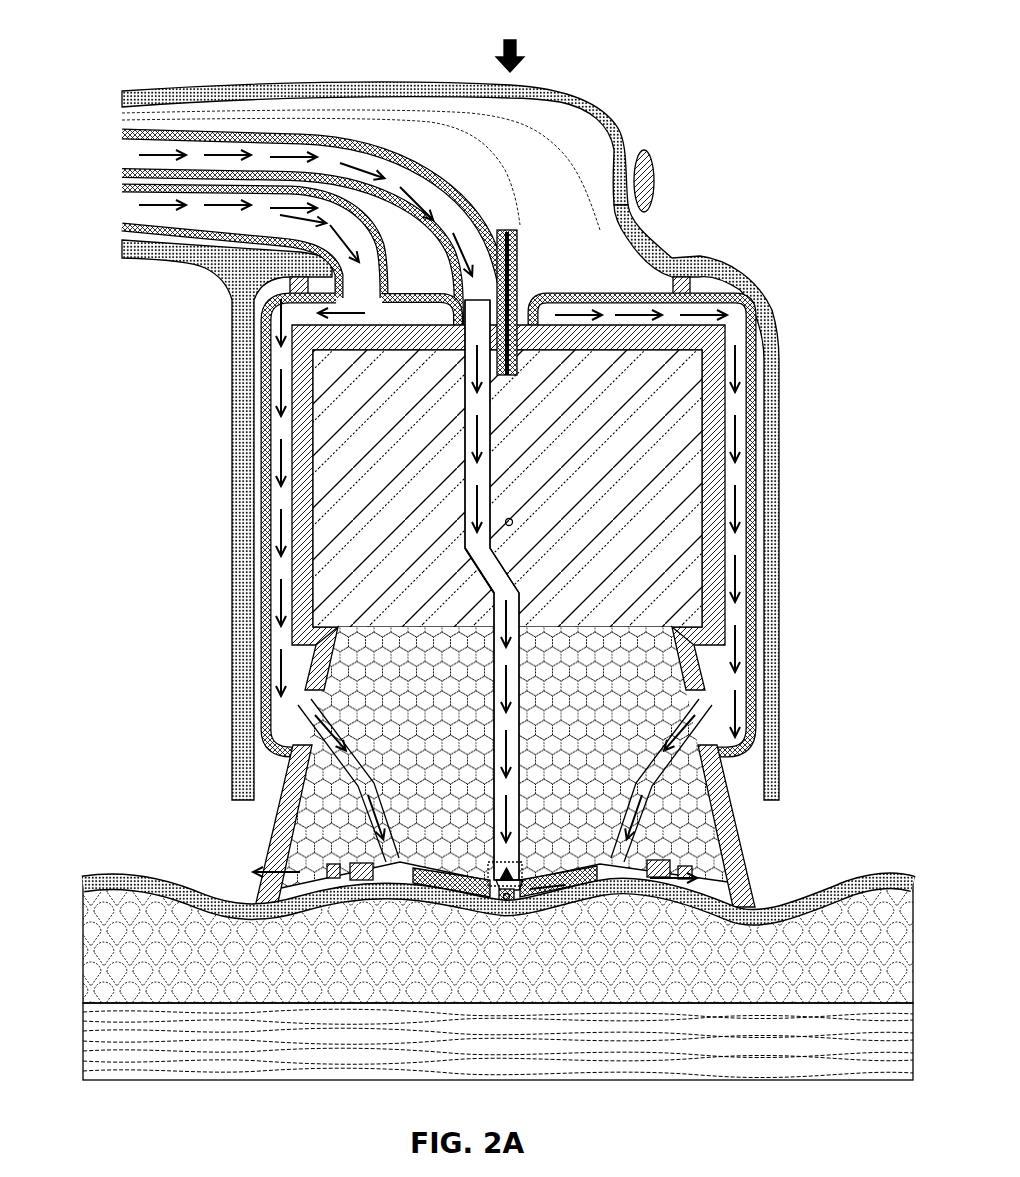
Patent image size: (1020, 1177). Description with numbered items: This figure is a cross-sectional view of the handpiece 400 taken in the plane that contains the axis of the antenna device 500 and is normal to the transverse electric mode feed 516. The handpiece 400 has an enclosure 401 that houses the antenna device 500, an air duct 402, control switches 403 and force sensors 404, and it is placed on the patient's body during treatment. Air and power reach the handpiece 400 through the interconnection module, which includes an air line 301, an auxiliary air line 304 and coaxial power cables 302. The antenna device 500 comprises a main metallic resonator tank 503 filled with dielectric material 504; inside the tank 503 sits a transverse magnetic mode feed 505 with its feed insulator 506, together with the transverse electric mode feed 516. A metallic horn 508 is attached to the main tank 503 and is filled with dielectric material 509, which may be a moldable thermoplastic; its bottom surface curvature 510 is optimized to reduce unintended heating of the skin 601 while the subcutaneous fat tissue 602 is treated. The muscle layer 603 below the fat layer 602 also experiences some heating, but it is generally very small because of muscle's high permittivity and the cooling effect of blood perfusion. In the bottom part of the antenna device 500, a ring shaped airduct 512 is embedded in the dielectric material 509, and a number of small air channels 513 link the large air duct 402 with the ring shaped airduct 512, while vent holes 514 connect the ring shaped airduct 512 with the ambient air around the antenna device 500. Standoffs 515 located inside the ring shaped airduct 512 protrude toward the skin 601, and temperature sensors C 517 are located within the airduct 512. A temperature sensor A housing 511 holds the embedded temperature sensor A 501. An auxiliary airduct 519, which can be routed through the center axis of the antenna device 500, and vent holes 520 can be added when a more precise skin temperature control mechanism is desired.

The handpiece 400 is at (507, 40).
The coaxial power cables 302 is at (193, 123).
The auxiliary air line 304 is at (177, 163).
The air line 301 is at (177, 218).
The force sensors 404 is at (292, 288).
The control switches 403 is at (652, 183).
The enclosure 401 is at (752, 295).
The main metallic resonator tank 503 is at (714, 438).
The feed insulator 506 is at (497, 350).
The transverse magnetic (TM) mode feed 505 is at (500, 392).
The auxiliary airduct 519 is at (478, 497).
The transverse electric (TE) mode feed 516 is at (512, 525).
The air duct 402 is at (295, 624).
The dielectric material 504 is at (400, 592).
The antenna device 500 is at (462, 750).
The dielectric material 509 is at (597, 707).
The metallic horn 508 is at (727, 747).
The ring shaped airduct 512 is at (403, 800).
The small air channels 513 is at (643, 808).
The temperature sensor A housing 511 is at (484, 880).
The vent holes 514 is at (747, 875).
The standoffs 515 is at (352, 884).
The bottom surface curvature 510 is at (323, 897).
The vent holes 520 is at (535, 890).
The temperature sensor A 501 is at (508, 905).
The temperature sensors C 517 is at (313, 873).
The skin 601 is at (217, 903).
The subcutaneous fat tissue 602 is at (498, 931).
The muscle layer 603 is at (498, 1041).